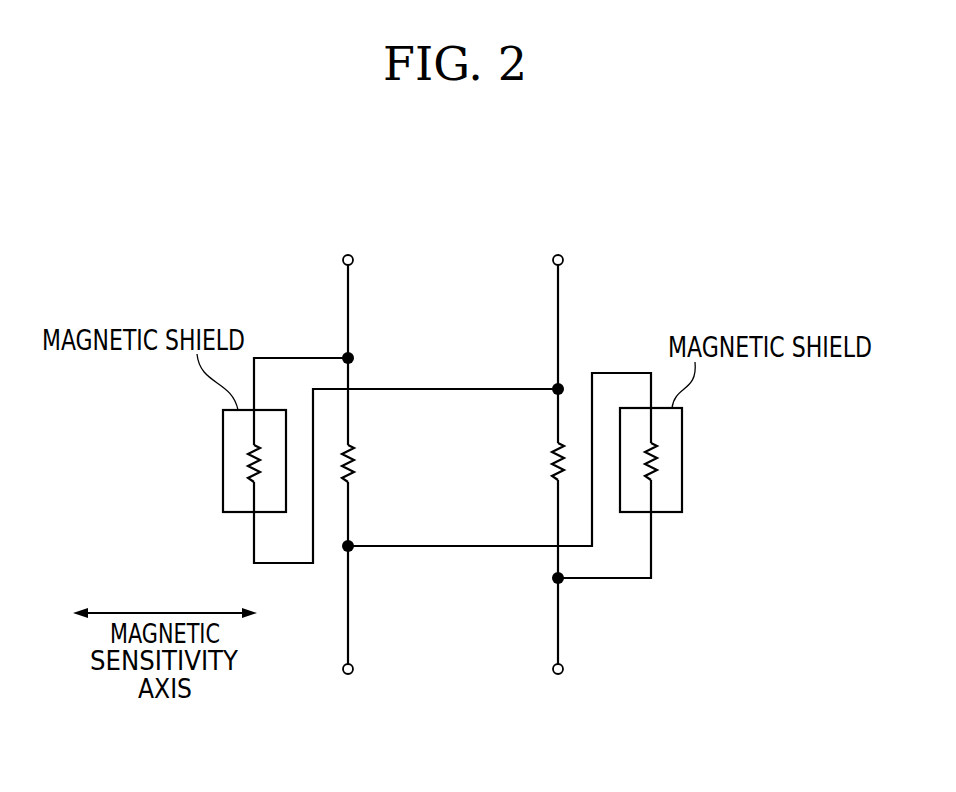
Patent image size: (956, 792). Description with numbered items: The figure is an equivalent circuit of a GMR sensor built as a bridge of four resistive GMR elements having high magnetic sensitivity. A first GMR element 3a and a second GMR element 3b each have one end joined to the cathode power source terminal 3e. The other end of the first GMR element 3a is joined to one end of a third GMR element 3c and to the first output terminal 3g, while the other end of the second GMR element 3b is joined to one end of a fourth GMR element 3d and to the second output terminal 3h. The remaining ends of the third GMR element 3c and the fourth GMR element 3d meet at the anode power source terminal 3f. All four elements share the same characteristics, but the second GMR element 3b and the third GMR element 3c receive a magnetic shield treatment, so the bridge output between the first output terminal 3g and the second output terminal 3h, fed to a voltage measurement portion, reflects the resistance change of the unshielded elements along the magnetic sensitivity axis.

The first GMR element 3a is at (352, 452).
The second GMR element 3b is at (250, 458).
The third GMR element 3c is at (654, 470).
The fourth GMR element 3d is at (553, 474).
The cathode power source terminal 3e is at (348, 255).
The anode power source terminal 3f is at (558, 674).
The first output terminal 3g is at (348, 674).
The second output terminal 3h is at (558, 255).